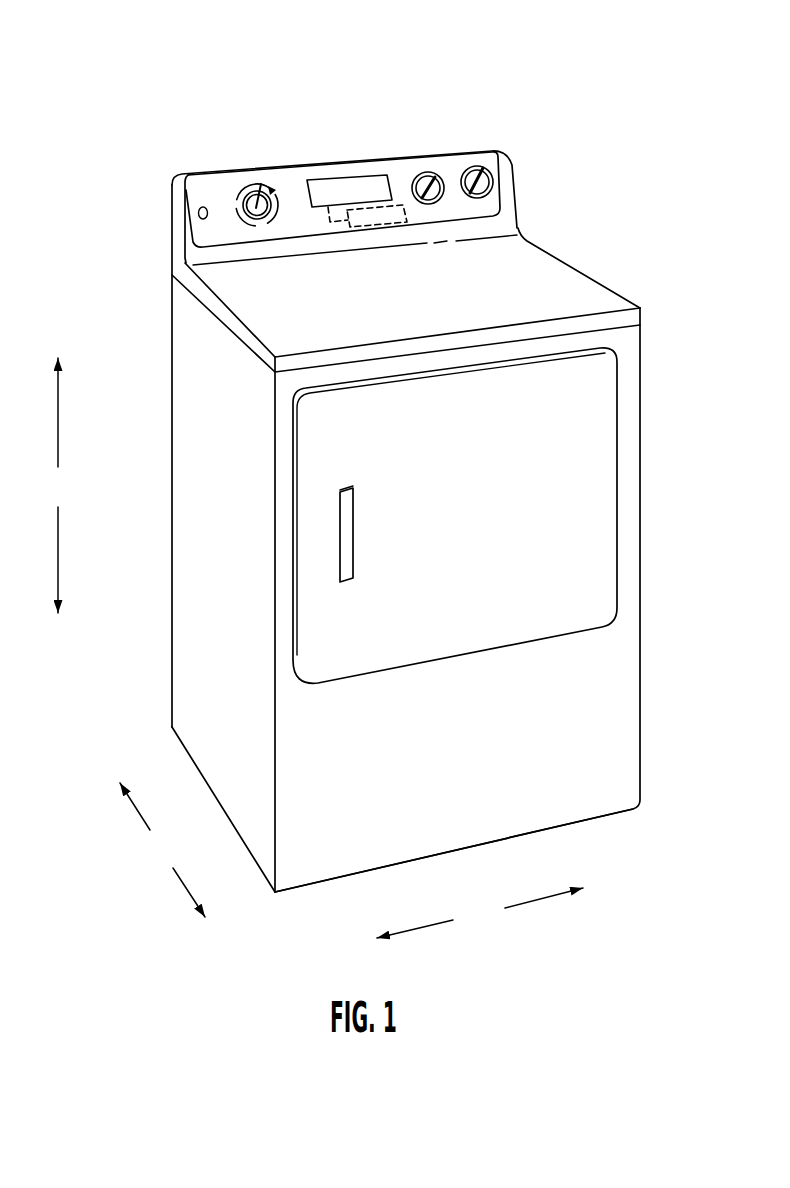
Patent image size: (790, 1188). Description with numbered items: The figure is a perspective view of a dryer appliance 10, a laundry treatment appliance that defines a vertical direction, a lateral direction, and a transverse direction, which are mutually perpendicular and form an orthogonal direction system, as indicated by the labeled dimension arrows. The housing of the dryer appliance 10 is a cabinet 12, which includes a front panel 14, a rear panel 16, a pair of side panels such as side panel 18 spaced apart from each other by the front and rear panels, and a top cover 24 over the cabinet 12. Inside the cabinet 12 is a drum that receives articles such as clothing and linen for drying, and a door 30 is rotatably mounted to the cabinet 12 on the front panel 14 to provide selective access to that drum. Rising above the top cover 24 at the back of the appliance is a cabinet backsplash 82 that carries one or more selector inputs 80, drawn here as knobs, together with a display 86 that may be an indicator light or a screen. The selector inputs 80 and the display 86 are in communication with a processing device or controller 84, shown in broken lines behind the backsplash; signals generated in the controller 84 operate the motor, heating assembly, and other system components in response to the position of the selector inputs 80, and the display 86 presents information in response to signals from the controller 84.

The dryer appliance 10 is at (183, 75).
The cabinet 12 is at (642, 698).
The front panel 14 is at (597, 795).
The rear panel 16 is at (170, 361).
The side panel 18 is at (190, 503).
The top cover 24 is at (542, 278).
The door 30 is at (590, 492).
The selector inputs 80 is at (269, 190).
The cabinet backsplash 82 is at (203, 188).
The controller 84 is at (400, 210).
The display 86 is at (332, 188).